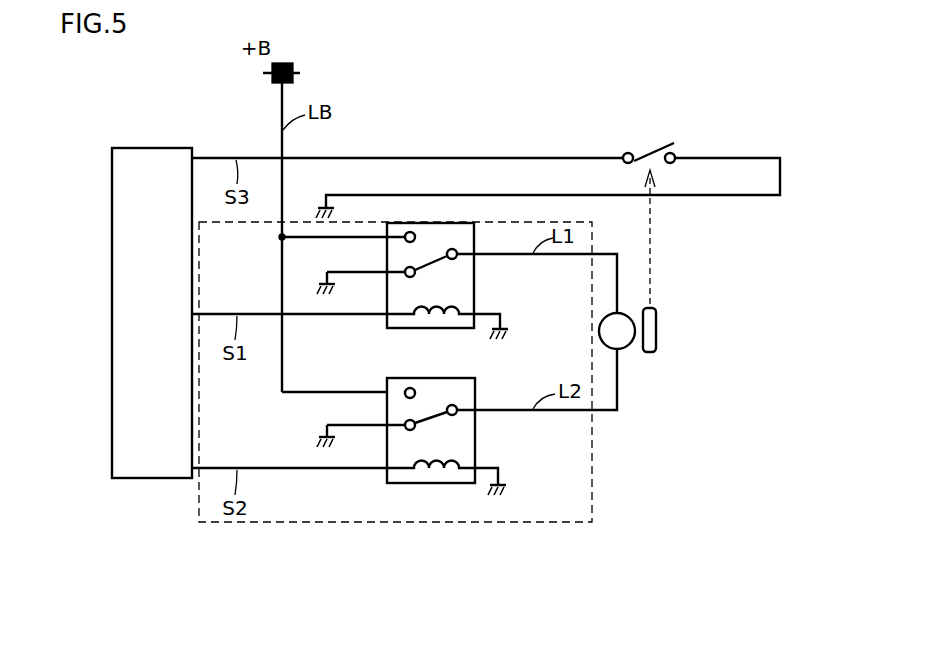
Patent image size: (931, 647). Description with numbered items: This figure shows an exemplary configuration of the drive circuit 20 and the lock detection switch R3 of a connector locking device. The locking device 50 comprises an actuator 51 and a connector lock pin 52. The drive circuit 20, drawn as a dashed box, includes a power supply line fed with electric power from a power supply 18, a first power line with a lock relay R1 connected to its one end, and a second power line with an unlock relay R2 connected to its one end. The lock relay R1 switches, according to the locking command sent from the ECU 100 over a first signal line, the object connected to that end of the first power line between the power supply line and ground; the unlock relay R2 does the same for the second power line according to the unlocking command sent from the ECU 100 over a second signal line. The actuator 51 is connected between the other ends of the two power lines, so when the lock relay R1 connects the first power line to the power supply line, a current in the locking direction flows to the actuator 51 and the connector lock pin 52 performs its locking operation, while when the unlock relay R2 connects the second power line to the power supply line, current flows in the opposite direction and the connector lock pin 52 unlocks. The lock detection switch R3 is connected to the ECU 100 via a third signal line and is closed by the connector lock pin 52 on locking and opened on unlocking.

The ECU 100 is at (151, 147).
The power supply 18 is at (287, 62).
The drive circuit 20 is at (528, 523).
The locking device 50 is at (697, 372).
The actuator 51 is at (624, 349).
The connector lock pin 52 is at (651, 353).
The lock relay R1 is at (477, 284).
The unlock relay R2 is at (477, 437).
The lock detection switch R3 is at (651, 152).